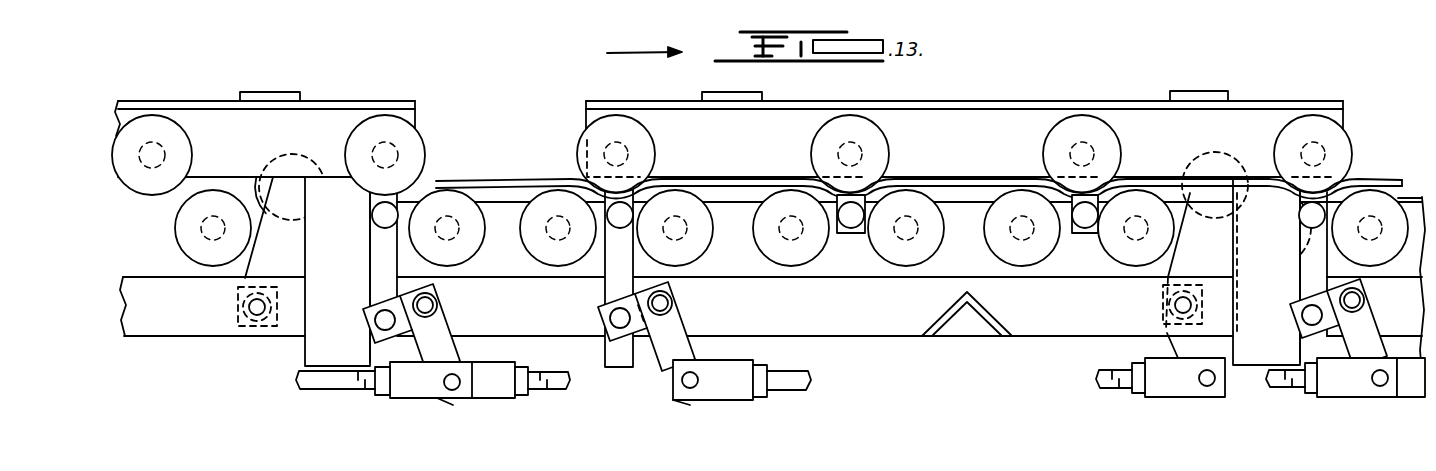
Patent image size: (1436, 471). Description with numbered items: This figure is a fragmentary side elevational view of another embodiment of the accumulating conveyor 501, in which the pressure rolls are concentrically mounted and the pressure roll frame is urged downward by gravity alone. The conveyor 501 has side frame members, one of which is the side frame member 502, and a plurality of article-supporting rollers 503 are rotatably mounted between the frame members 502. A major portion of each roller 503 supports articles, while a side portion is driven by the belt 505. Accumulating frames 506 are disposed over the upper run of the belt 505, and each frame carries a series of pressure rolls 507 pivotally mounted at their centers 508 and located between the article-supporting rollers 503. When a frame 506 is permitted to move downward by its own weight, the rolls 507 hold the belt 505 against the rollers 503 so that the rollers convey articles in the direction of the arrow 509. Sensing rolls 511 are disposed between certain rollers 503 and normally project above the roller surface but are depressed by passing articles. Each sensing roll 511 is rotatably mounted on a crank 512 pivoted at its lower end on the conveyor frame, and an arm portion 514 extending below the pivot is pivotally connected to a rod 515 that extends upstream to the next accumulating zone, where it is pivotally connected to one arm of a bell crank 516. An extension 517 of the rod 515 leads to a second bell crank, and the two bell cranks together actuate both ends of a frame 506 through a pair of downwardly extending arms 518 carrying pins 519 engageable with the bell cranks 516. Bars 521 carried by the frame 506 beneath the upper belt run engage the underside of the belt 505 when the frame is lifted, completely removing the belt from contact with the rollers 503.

The conveyor 501 is at (916, 355).
The side frame member 502 is at (770, 273).
The article-supporting roller 503 is at (685, 252).
The belt 505 is at (988, 158).
The accumulating frame 506 is at (338, 117).
The pressure roll 507 is at (600, 131).
The center 508 is at (870, 137).
The arrow 509 is at (632, 55).
The sensing roll 511 is at (1233, 128).
The crank 512 is at (1185, 254).
The arm portion 514 is at (1190, 345).
The rod 515 is at (550, 390).
The bell crank 516 is at (440, 338).
The extension 517 is at (340, 387).
The downwardly extending arm 518 is at (617, 282).
The pin 519 is at (613, 318).
The bar 521 is at (856, 226).